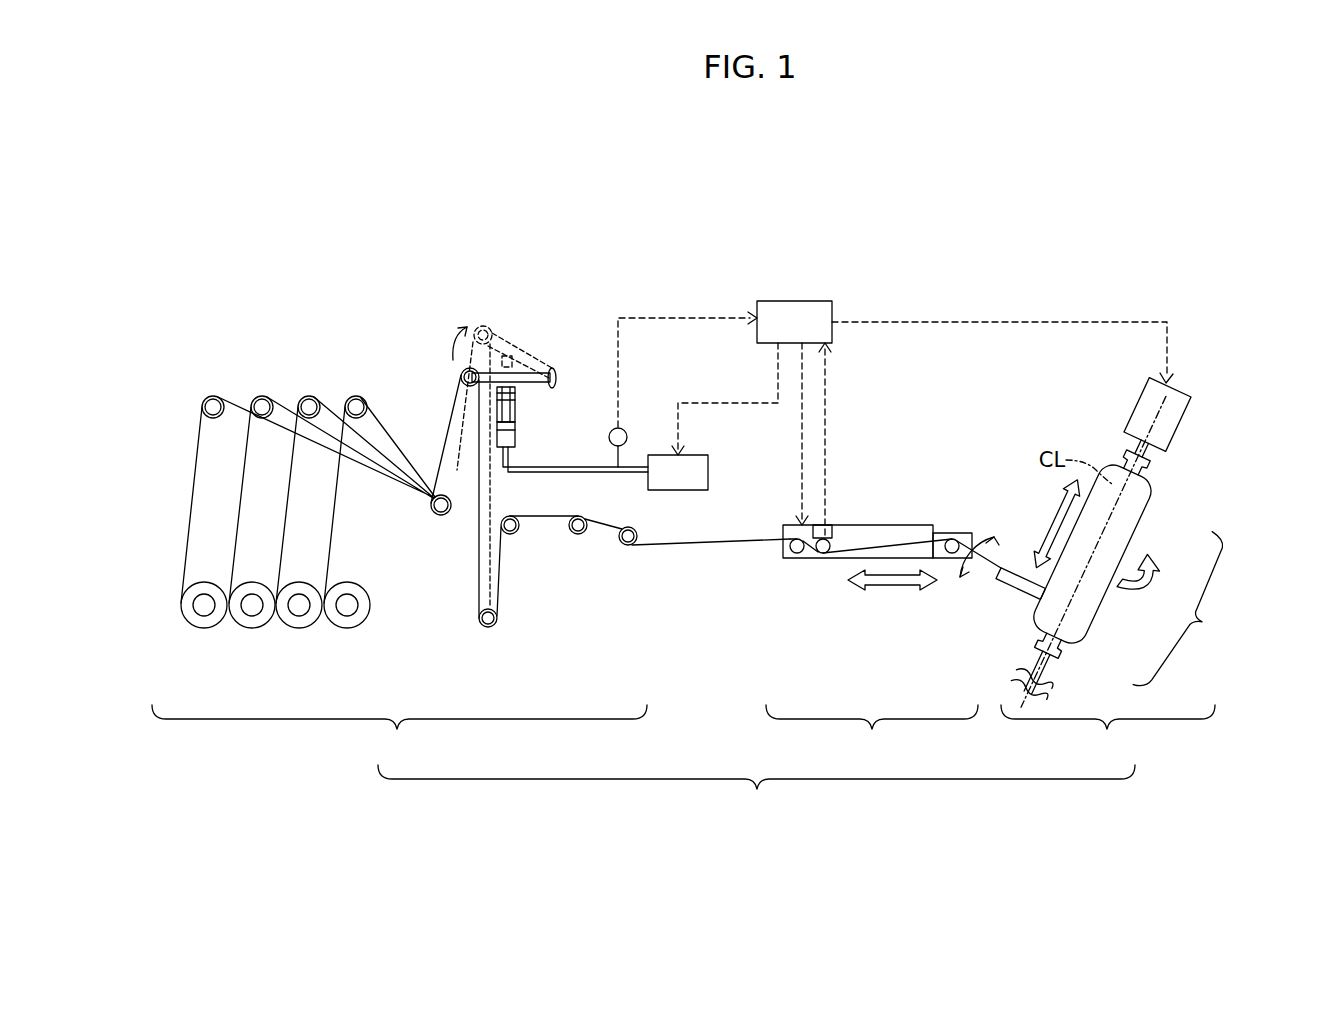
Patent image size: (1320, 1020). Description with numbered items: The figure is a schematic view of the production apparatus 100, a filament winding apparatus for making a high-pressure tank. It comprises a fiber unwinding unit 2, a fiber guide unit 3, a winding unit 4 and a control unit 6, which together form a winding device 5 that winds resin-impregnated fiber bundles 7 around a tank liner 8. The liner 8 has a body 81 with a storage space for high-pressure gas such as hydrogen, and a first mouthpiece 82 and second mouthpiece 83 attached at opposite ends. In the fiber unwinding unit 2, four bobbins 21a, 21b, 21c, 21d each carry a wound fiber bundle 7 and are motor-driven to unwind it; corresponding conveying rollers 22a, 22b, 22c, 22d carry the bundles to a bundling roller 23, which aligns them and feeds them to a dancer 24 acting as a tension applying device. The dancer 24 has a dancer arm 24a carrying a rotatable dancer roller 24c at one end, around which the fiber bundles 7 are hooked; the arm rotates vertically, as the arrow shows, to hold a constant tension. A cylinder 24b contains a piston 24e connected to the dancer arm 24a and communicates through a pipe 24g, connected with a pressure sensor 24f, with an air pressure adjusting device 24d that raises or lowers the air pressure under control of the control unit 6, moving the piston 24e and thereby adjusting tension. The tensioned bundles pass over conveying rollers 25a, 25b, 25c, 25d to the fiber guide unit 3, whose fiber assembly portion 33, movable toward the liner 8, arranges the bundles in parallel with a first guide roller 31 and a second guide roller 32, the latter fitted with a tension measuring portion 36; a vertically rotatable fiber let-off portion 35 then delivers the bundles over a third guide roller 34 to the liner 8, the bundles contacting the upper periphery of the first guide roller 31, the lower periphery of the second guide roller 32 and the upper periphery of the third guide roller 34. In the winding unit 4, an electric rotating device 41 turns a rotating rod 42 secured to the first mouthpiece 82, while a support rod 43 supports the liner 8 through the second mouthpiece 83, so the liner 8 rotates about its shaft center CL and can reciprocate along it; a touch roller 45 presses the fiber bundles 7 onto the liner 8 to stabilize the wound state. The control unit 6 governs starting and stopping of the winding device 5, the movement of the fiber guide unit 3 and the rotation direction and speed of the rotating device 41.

The web winding system 100 is at (1040, 290).
The fiber unwinding unit 2 is at (399, 734).
The fiber guide unit 3 is at (872, 737).
The winding unit 4 is at (1108, 737).
The winding device 5 is at (756, 793).
The control unit 6 is at (790, 318).
The fiber bundles 7 is at (196, 483).
The tank liner 8 is at (1185, 614).
The bobbin 21a is at (190, 624).
The bobbin 21b is at (238, 624).
The bobbin 21c is at (285, 624).
The bobbin 21d is at (333, 624).
The conveying roller 22a is at (207, 397).
The conveying roller 22b is at (256, 397).
The conveying roller 22c is at (303, 397).
The conveying roller 22d is at (350, 397).
The bundling roller 23 is at (438, 515).
The dancer 24 is at (517, 290).
The dancer arm 24a is at (515, 378).
The cylinder 24b is at (515, 405).
The dancer roller 24c is at (461, 378).
The air pressure adjusting device 24d is at (708, 478).
The piston 24e is at (510, 432).
The pressure sensor 24f is at (625, 430).
The pipe 24g is at (520, 473).
The conveying roller 25a is at (495, 616).
The conveying roller 25b is at (510, 532).
The conveying roller 25c is at (578, 532).
The conveying roller 25d is at (628, 544).
The first guide roller 31 is at (797, 553).
The second guide roller 32 is at (820, 553).
The fiber assembly portion 33 is at (878, 527).
The third guide roller 34 is at (953, 553).
The fiber let-off portion 35 is at (952, 533).
The tension measuring portion 36 is at (826, 535).
The rotating device 41 is at (1182, 425).
The rotating rod 42 is at (1147, 451).
The support rod 43 is at (1041, 675).
The touch roller 45 is at (1011, 586).
The body 81 is at (1101, 603).
The first mouthpiece 82 is at (1149, 466).
The second mouthpiece 83 is at (1061, 655).